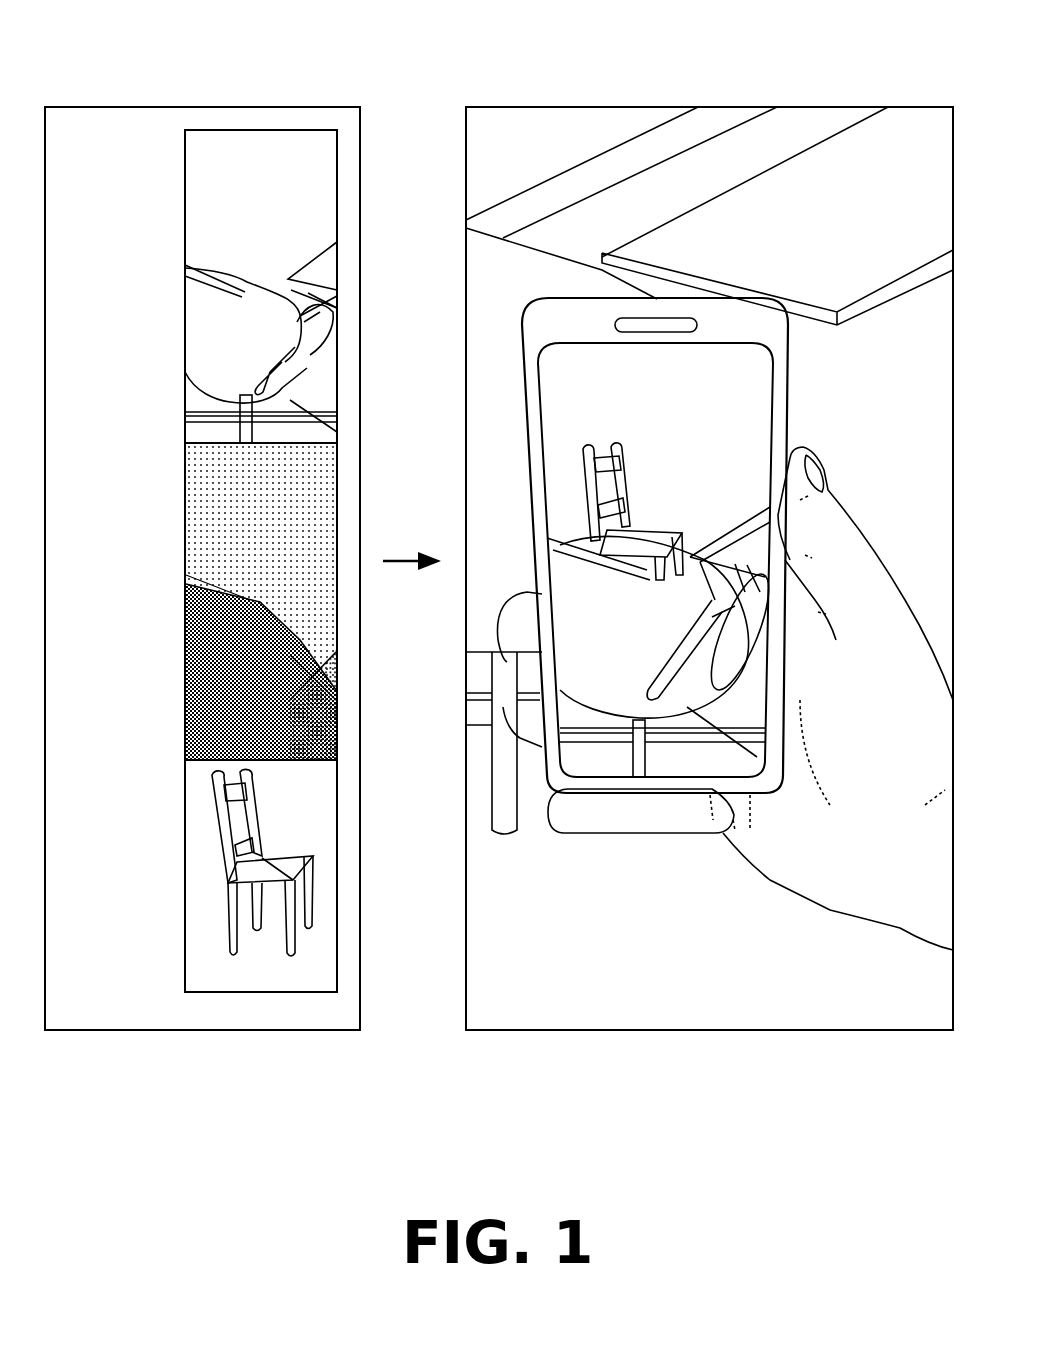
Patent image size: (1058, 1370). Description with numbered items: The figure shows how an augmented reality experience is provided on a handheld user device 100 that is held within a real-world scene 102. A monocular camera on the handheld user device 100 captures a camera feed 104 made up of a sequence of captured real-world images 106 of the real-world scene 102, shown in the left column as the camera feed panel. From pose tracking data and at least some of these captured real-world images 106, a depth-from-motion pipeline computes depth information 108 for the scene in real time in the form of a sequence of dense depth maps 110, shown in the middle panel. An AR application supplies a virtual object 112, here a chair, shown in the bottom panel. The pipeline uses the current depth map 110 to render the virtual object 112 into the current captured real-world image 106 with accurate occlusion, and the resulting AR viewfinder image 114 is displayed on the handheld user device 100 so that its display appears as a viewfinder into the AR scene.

The handheld user device 100 is at (791, 390).
The real-world scene 102 is at (826, 102).
The camera feed 104 is at (185, 176).
The captured real-world image 106 is at (185, 340).
The depth information 108 is at (185, 490).
The dense depth map 110 is at (185, 685).
The virtual object 112 is at (185, 928).
The AR viewfinder image 114 is at (790, 432).